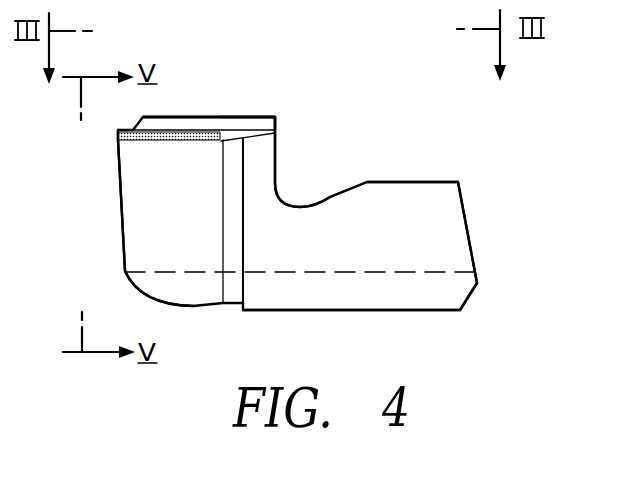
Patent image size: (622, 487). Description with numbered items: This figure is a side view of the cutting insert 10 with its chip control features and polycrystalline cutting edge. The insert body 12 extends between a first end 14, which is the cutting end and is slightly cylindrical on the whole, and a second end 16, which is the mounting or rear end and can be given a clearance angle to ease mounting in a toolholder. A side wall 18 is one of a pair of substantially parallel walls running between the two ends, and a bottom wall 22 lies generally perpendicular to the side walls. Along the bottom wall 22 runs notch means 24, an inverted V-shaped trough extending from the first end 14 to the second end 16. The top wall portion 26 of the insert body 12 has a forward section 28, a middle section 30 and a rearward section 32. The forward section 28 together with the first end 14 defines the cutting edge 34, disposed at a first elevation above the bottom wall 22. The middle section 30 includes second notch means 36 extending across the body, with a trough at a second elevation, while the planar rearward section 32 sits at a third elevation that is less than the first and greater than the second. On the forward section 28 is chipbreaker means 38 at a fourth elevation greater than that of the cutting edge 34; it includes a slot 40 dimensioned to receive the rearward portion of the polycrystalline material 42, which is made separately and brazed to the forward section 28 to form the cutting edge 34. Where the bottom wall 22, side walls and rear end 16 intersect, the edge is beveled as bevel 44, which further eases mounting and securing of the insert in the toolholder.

The cutting insert 10 is at (333, 100).
The insert body 12 is at (395, 297).
The first end 14 is at (122, 230).
The second end 16 is at (473, 238).
The side wall 18 is at (352, 290).
The bottom wall 22 is at (253, 312).
The notch means 24 is at (125, 271).
The top wall portion 26 is at (263, 117).
The forward section 28 is at (177, 116).
The middle section 30 is at (352, 188).
The rearward section 32 is at (420, 182).
The cutting edge 34 is at (117, 135).
The second notch means 36 is at (298, 204).
The chipbreaker means 38 is at (245, 116).
The slot 40 is at (216, 141).
The polycrystalline material 42 is at (162, 141).
The bevel 44 is at (478, 293).